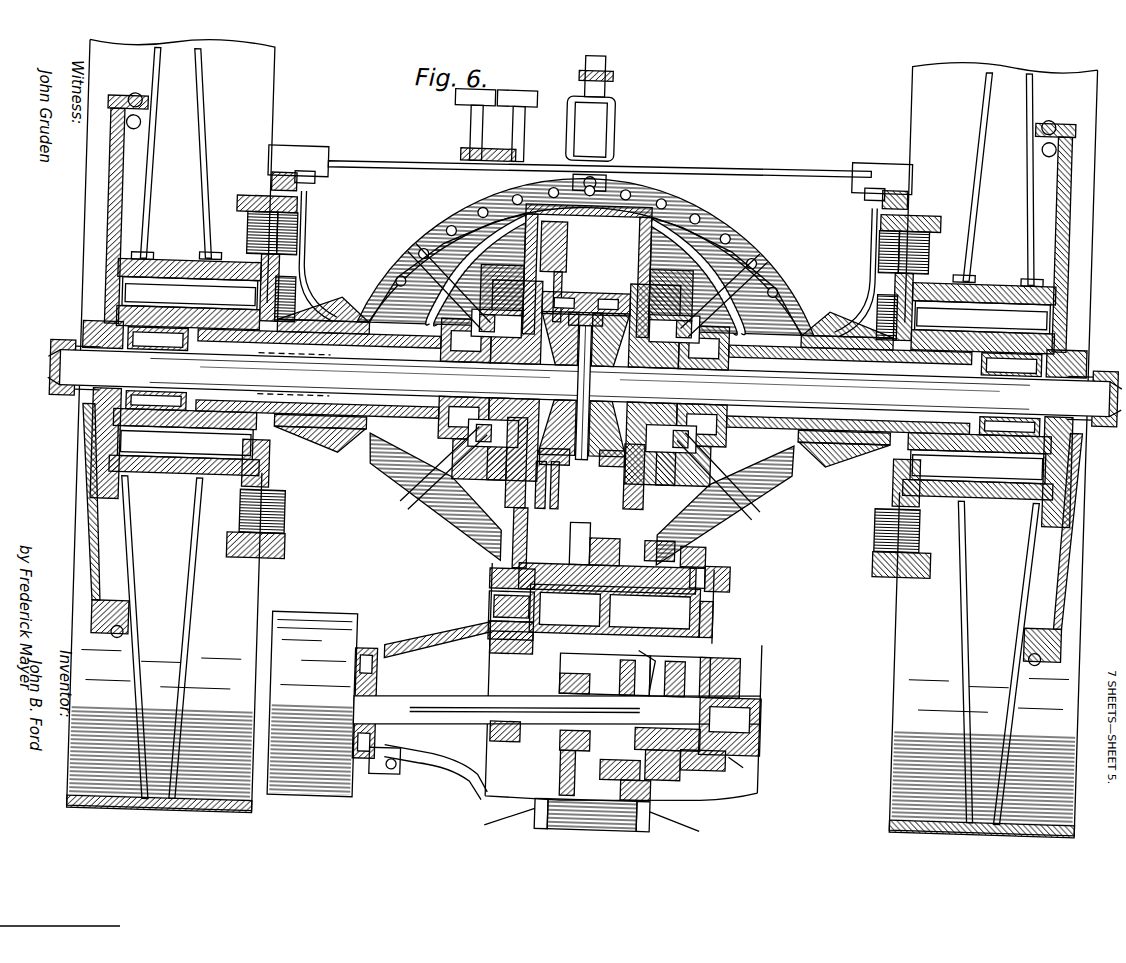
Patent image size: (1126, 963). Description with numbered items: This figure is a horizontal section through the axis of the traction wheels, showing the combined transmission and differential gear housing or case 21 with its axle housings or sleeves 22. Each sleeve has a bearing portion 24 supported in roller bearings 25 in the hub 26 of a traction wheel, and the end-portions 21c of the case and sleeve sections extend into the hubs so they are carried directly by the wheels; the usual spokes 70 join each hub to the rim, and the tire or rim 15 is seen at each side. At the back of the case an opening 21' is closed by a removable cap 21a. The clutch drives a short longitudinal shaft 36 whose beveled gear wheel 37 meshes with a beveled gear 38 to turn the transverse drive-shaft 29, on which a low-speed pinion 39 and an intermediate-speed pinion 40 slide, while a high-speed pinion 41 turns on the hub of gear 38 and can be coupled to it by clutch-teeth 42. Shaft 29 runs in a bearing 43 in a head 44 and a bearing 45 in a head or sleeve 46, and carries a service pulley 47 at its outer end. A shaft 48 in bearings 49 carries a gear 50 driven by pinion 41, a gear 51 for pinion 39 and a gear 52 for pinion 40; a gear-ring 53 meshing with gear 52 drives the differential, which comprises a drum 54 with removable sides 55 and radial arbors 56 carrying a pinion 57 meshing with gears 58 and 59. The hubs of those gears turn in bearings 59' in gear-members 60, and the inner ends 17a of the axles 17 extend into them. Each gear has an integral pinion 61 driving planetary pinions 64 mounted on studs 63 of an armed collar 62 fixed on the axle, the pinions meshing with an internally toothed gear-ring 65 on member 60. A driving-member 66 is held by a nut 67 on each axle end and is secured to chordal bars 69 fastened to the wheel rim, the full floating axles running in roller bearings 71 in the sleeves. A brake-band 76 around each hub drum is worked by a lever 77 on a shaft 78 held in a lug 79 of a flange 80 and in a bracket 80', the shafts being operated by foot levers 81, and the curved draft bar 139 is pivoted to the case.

The wheel tire rim 15 is at (80, 244).
The axle 17 is at (585, 383).
The inner end of axle 17a is at (755, 266).
The combined transmission and differential gear housing or case 21 is at (575, 373).
The removable cap 21a is at (600, 165).
The opening 21' is at (627, 118).
The end-portion of case section and sleeve 21c is at (185, 300).
The axle housing or sleeve 22 is at (330, 314).
The bearing portion 24 is at (92, 432).
The roller bearing 25 is at (88, 458).
The hub of traction wheel 26 is at (153, 472).
The transverse drive-shaft 29 is at (775, 682).
The short longitudinal shaft 36 is at (592, 815).
The beveled gear wheel 37 is at (571, 745).
The beveled gear 38 is at (661, 776).
The low-speed pinion 39 is at (612, 672).
The intermediate-speed pinion 40 is at (455, 653).
The high-speed pinion 41 is at (700, 750).
The clutch-teeth 42 is at (714, 755).
The bearing 43 is at (760, 665).
The head 44 is at (724, 651).
The bearing 45 is at (380, 655).
The head or sleeve 46 is at (480, 642).
The service pulley 47 is at (312, 704).
The shaft 48 is at (724, 588).
The bearing 49 is at (720, 560).
The gear 50 is at (695, 538).
The gear 51 is at (584, 543).
The gear 52 is at (496, 569).
The gear-ring 53 is at (562, 483).
The drum 54 is at (586, 297).
The removable side of drum 55 is at (616, 453).
The radial arbor 56 is at (570, 447).
The pinion 57 is at (583, 299).
The gear 58 is at (584, 384).
The gear 59 is at (555, 378).
The bearing 59' is at (584, 383).
The gear-member 60 is at (700, 240).
The integral pinion 61 is at (583, 402).
The armed collar 62 is at (470, 310).
The stud 63 is at (480, 290).
The planetary pinion 64 is at (560, 272).
The internally toothed gear-ring 65 is at (440, 268).
The driving-member 66 is at (100, 283).
The nut 67 is at (50, 356).
The chordal bar 69 is at (106, 96).
The spoke 70 is at (200, 195).
The roller bearing 71 is at (100, 315).
The brake-band 76 is at (280, 556).
The lever 77 is at (280, 145).
The shaft 78 is at (768, 151).
The lug 79 is at (303, 202).
The flange 80 is at (584, 374).
The bracket 80' is at (464, 145).
The foot lever 81 is at (450, 100).
The curved bar 139 is at (432, 212).